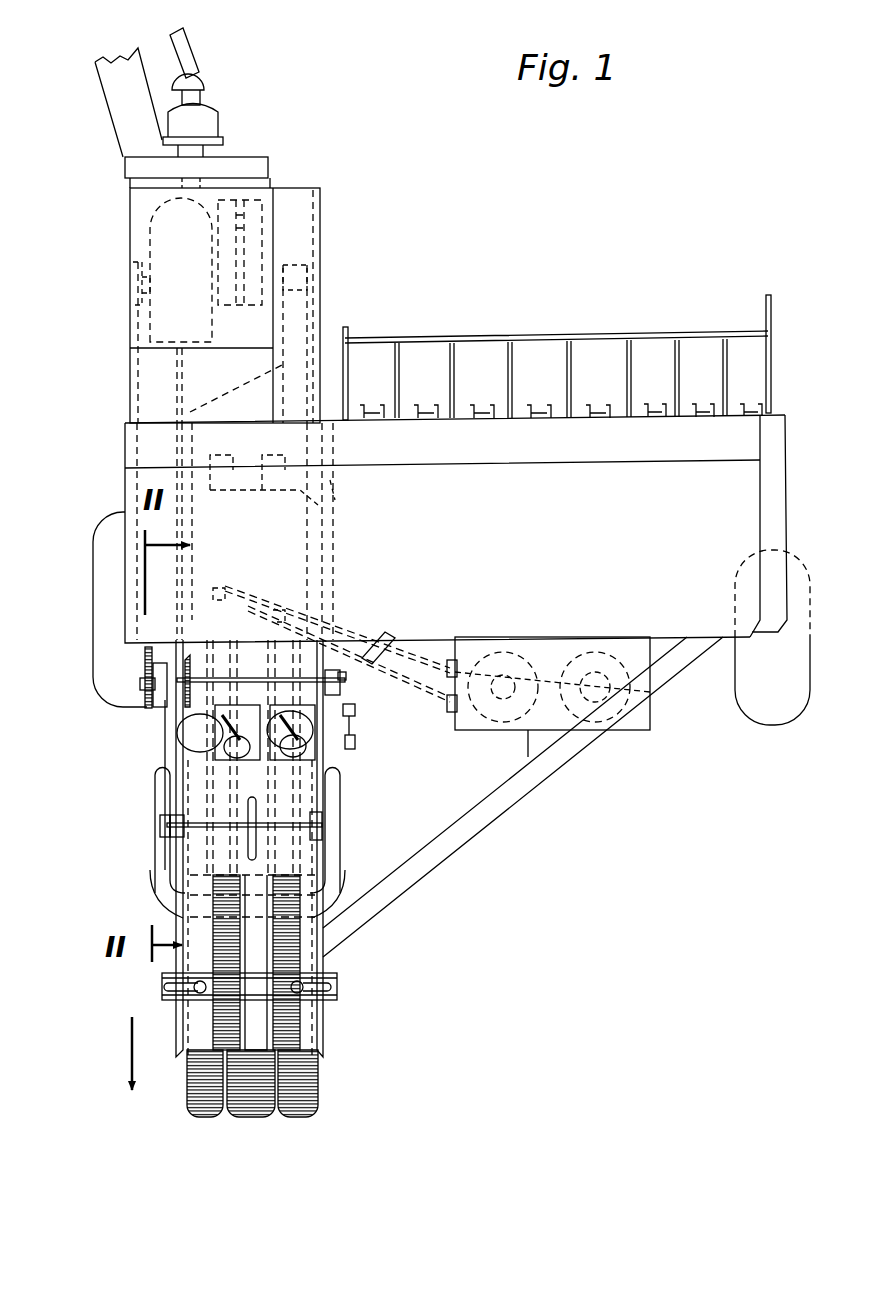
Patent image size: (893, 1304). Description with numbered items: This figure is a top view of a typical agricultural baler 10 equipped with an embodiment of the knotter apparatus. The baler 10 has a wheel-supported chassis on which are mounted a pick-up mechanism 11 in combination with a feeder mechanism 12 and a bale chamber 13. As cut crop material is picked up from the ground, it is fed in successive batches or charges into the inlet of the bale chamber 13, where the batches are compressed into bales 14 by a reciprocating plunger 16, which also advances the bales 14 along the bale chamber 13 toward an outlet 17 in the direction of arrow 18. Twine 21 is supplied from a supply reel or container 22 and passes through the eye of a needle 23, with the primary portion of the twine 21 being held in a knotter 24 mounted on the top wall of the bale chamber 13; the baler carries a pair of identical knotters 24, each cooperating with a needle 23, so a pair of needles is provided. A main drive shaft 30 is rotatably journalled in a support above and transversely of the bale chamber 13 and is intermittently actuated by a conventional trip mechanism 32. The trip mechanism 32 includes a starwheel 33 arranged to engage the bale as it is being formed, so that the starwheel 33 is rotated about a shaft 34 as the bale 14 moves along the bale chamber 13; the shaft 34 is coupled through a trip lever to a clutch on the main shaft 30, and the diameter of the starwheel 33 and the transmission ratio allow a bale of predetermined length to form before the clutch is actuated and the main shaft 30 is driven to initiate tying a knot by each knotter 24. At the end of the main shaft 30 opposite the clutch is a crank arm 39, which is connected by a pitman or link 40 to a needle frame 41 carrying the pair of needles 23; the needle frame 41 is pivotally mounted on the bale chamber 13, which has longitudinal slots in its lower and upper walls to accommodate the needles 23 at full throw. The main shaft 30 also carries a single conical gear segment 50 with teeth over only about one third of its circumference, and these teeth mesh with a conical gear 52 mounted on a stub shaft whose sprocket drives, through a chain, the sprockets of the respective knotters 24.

The agricultural baler 10 is at (487, 238).
The pick-up mechanism 11 is at (762, 400).
The feeder mechanism 12 is at (762, 503).
The bale chamber 13 is at (347, 742).
The bale 14 is at (320, 1088).
The reciprocating plunger 16 is at (223, 390).
The outlet 17 is at (325, 1055).
The arrow 18 is at (127, 1045).
The twine 21 is at (415, 660).
The supply reel or container 22 is at (530, 735).
The needle 23 is at (223, 673).
The knotter 24 is at (152, 785).
The main drive shaft 30 is at (307, 673).
The trip mechanism 32 is at (160, 852).
The starwheel 33 is at (320, 828).
The shaft 34 is at (315, 812).
The crank arm 39 is at (343, 686).
The pitman or link 40 is at (355, 713).
The needle frame 41 is at (372, 916).
The conical gear segment 50 is at (185, 707).
The conical gear 52 is at (190, 712).